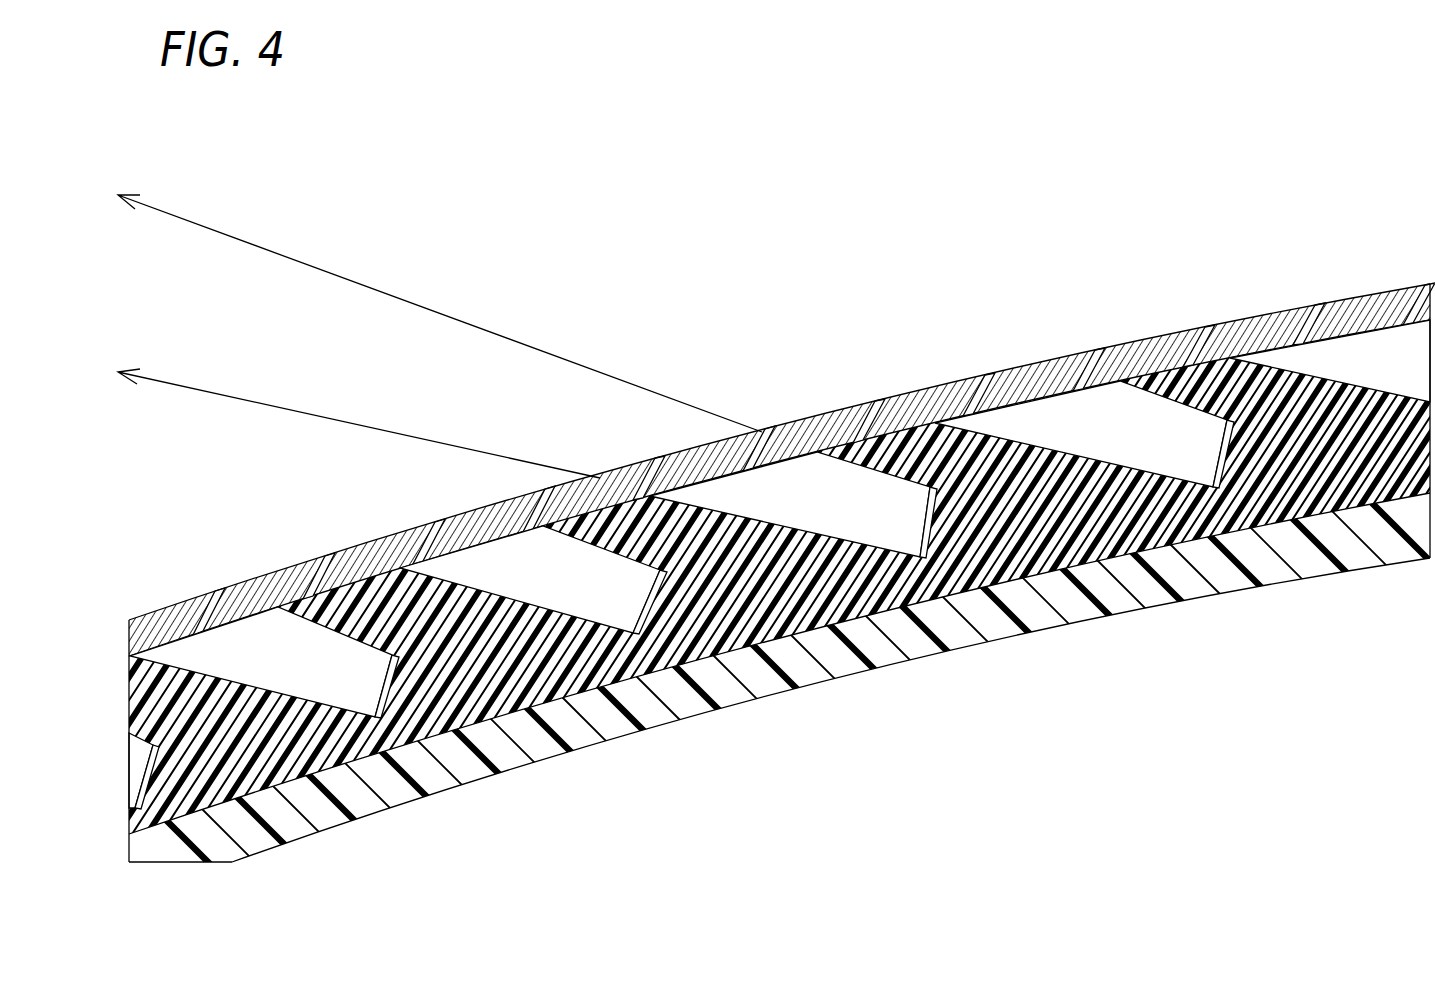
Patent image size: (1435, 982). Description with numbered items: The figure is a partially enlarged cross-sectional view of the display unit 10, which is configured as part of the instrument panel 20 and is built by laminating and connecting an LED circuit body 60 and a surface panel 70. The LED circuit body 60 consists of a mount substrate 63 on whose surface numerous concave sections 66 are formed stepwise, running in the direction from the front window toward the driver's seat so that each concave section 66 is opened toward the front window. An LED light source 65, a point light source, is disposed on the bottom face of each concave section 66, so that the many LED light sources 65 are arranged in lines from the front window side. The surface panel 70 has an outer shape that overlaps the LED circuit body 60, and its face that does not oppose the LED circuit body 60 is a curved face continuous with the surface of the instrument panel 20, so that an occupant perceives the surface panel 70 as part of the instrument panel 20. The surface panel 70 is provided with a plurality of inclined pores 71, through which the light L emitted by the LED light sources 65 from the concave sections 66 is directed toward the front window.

The display unit 10 is at (1165, 305).
The instrument panel 20 is at (984, 618).
The LED circuit body 60 is at (828, 632).
The mount substrate 63 is at (507, 688).
The LED light source 65 is at (647, 607).
The concave section 66 is at (575, 598).
The surface panel 70 is at (985, 372).
The pore 71 is at (628, 463).
The light L is at (385, 292).